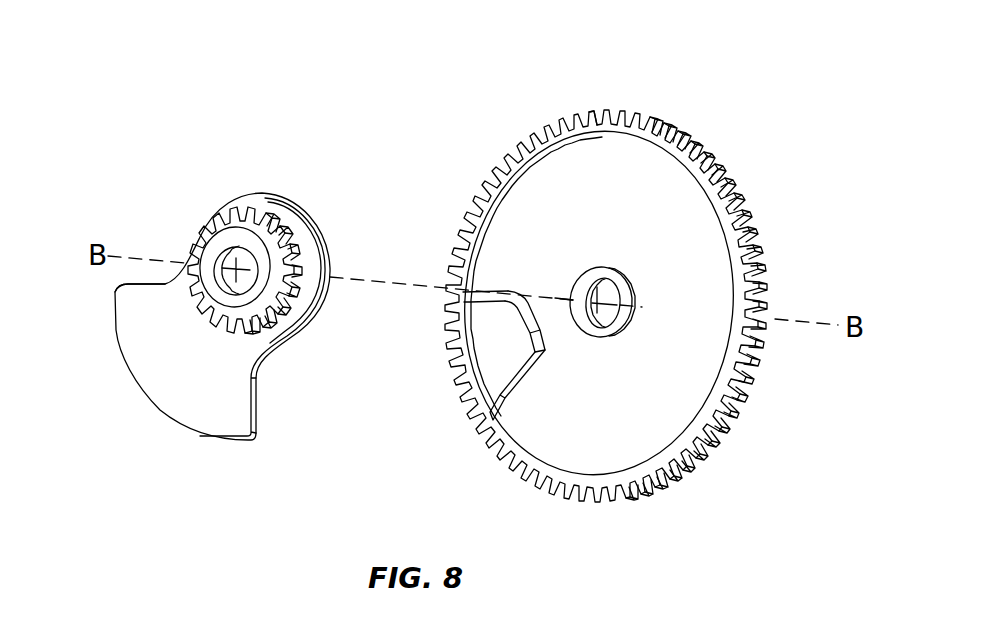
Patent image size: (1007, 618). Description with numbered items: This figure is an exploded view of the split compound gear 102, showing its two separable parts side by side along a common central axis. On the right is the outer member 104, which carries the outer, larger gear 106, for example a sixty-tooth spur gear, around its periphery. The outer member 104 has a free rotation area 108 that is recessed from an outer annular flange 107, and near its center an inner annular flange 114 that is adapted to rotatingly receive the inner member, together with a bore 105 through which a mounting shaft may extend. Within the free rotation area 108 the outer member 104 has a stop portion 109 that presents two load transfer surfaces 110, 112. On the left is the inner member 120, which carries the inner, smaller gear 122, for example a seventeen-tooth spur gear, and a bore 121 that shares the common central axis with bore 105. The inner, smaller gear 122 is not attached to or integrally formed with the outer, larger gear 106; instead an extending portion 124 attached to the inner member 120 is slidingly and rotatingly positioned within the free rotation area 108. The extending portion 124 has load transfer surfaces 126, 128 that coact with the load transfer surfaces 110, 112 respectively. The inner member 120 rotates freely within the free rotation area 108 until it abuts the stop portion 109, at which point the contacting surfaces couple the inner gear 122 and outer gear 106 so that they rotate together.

The split compound gear 102 is at (258, 49).
The outer member 104 is at (462, 149).
The bore 105 is at (595, 290).
The outer, larger gear 106 is at (768, 249).
The outer annular flange 107 is at (597, 108).
The free rotation area 108 is at (615, 220).
The stop portion 109 is at (553, 375).
The load transfer surface 110 is at (500, 291).
The load transfer surface 112 is at (513, 393).
The inner annular flange 114 is at (633, 300).
The inner member 120 is at (204, 172).
The bore 121 is at (222, 245).
The inner, smaller gear 122 is at (283, 222).
The extending portion 124 is at (162, 363).
The load transfer surface 126 is at (256, 396).
The load transfer surface 128 is at (128, 284).